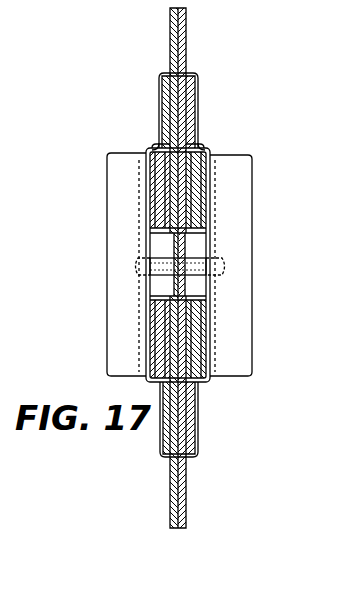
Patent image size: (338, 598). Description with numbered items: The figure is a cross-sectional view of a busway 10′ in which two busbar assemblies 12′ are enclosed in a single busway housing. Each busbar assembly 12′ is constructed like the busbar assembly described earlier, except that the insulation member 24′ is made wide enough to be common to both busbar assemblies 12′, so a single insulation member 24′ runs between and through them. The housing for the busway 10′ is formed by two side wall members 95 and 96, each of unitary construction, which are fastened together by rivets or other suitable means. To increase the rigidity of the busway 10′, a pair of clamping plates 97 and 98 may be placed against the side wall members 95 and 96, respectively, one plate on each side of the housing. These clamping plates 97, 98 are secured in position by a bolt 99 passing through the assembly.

The busway 10′ is at (254, 213).
The busbar assembly 12′ is at (199, 91).
The insulation member 24′ is at (178, 113).
The side wall member 95 is at (155, 150).
The side wall member 96 is at (207, 150).
The clamping plate 97 is at (108, 167).
The clamping plate 98 is at (250, 172).
The bolt 99 is at (162, 276).